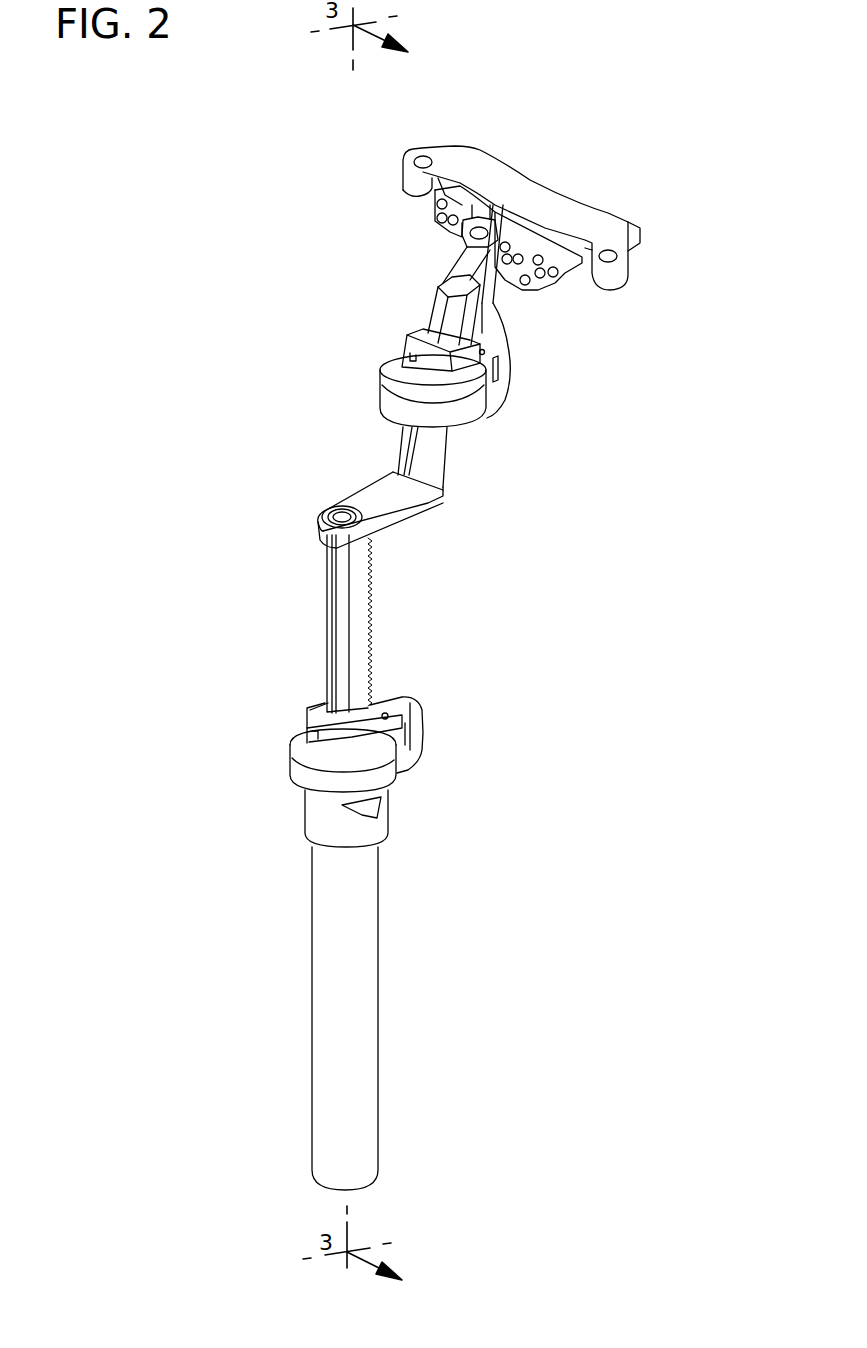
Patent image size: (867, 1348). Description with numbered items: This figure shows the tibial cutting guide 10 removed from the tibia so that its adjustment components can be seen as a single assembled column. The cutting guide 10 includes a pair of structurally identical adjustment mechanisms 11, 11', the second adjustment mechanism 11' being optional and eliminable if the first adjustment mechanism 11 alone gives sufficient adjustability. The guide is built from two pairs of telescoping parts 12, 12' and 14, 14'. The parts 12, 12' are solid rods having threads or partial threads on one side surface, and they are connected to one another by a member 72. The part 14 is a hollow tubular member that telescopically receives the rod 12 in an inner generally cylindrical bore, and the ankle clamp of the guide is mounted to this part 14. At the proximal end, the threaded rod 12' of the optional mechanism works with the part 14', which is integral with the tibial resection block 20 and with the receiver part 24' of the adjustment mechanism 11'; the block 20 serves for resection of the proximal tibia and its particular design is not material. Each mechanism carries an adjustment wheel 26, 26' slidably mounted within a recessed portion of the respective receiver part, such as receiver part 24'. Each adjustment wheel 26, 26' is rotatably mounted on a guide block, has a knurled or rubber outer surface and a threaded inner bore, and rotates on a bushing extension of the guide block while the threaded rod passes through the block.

The tibial cutting guide 10 is at (203, 450).
The adjustment mechanism 11 is at (428, 735).
The adjustment mechanism 11' is at (565, 366).
The telescoping part 12 is at (307, 624).
The threaded rod 12' is at (487, 461).
The telescoping part 14 is at (395, 1018).
The telescoping part 14' is at (413, 288).
The tibial resection block 20 is at (593, 222).
The receiver part 24' is at (546, 311).
The adjustment wheel 26 is at (292, 775).
The adjustment wheel 26' is at (390, 378).
The member 72 is at (383, 500).